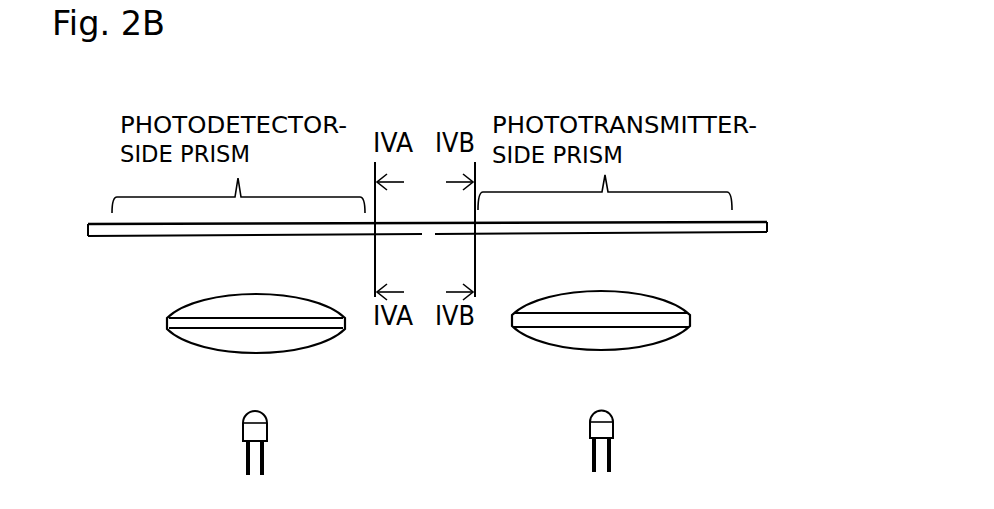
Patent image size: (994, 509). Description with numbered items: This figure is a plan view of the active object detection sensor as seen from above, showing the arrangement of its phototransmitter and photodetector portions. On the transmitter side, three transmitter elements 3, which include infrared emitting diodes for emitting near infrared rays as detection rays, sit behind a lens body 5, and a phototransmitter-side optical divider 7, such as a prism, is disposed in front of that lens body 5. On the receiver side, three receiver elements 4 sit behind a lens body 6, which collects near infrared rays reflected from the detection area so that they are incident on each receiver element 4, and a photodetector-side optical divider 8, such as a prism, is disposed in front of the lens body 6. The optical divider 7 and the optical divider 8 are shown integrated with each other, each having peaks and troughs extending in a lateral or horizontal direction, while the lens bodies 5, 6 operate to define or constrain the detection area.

The transmitter elements 3 is at (613, 427).
The receiver elements 4 is at (238, 432).
The lens body 5 is at (630, 304).
The lens body 6 is at (217, 310).
The phototransmitter-side optical divider 7 is at (653, 233).
The photodetector-side optical divider 8 is at (177, 237).